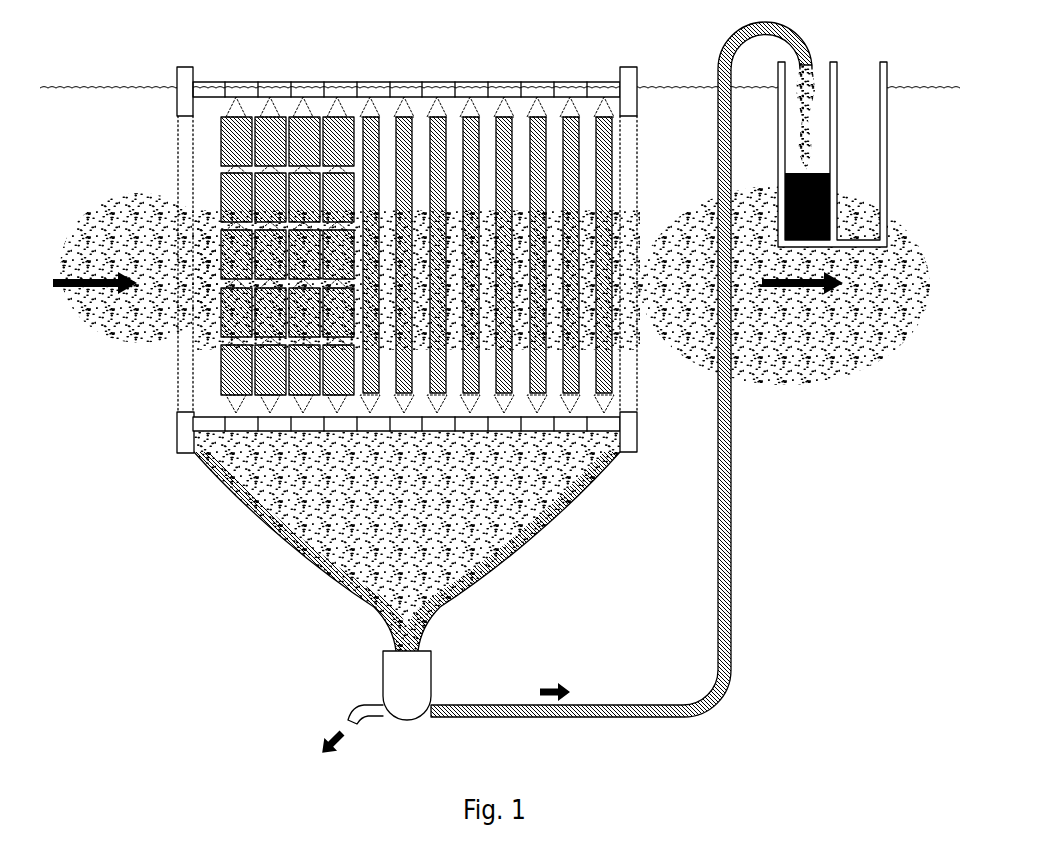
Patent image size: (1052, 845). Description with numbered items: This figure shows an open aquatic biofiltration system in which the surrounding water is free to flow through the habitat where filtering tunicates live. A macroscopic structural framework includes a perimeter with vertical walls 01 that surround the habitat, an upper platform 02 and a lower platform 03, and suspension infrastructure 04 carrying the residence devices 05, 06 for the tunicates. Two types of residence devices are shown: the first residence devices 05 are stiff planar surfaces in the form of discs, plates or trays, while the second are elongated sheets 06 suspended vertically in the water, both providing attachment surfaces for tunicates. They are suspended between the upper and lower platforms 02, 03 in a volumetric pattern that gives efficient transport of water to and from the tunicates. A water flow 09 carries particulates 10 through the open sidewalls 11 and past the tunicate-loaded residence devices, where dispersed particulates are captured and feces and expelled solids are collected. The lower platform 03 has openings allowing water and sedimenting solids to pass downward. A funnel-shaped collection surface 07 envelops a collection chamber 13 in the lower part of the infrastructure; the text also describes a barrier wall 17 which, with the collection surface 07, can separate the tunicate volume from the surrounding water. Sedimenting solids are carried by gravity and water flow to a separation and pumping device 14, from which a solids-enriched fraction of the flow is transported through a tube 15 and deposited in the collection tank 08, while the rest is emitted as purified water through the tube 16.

The vertical walls 01 is at (185, 67).
The upper platform 02 is at (576, 82).
The lower platform 03 is at (615, 458).
The suspension infrastructure 04 is at (405, 107).
The residence devices 05 is at (306, 118).
The elongated sheets 06 is at (536, 117).
The collection surface 07 is at (277, 543).
The collection tank 08 is at (890, 182).
The water flow 09 is at (92, 289).
The particulates 10 is at (123, 225).
The open sidewalls 11 is at (183, 394).
The collection chamber 13 is at (277, 462).
The separation and pumping device 14 is at (432, 677).
The tube 15 is at (734, 606).
The tube 16 is at (348, 708).
The barrier wall 17 is at (638, 265).